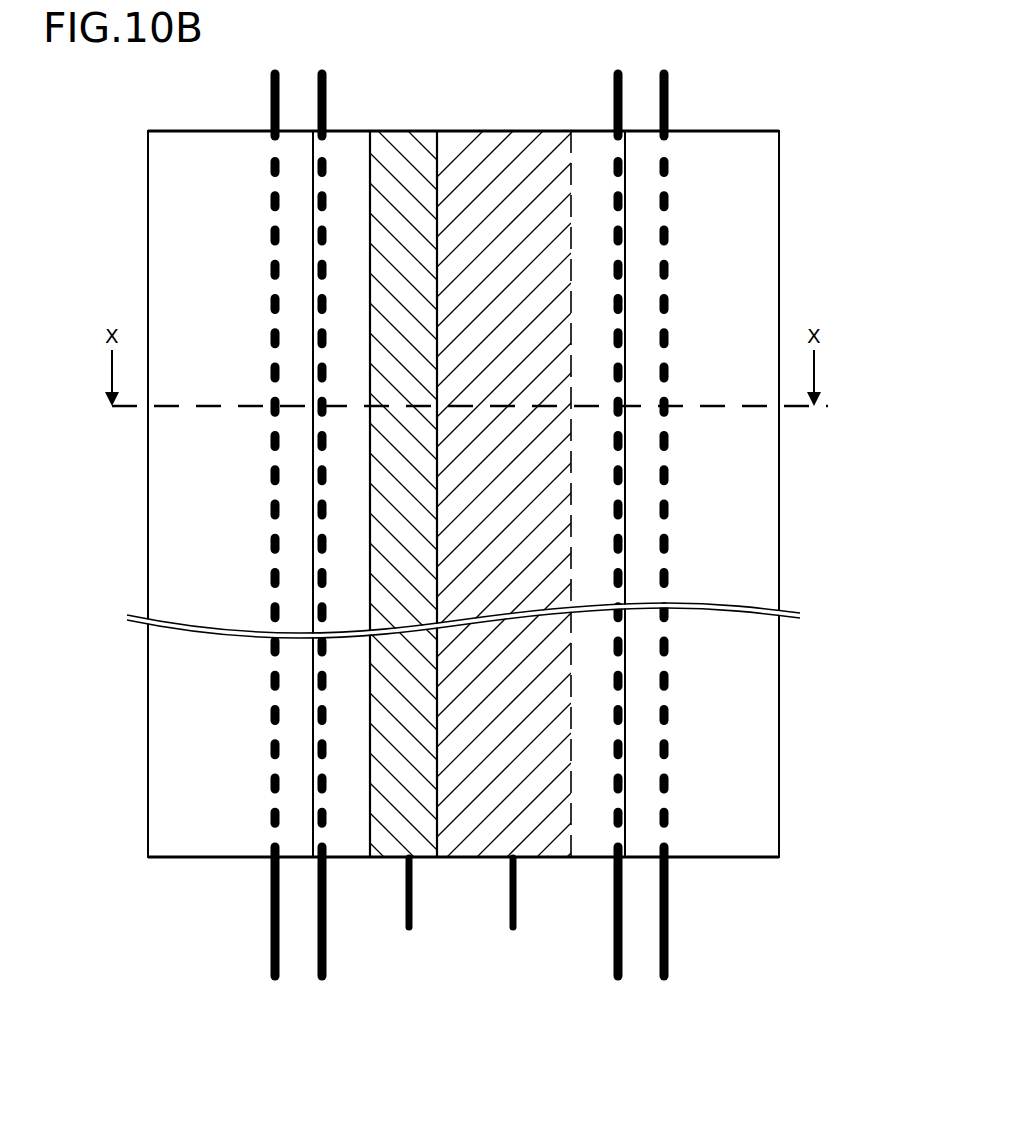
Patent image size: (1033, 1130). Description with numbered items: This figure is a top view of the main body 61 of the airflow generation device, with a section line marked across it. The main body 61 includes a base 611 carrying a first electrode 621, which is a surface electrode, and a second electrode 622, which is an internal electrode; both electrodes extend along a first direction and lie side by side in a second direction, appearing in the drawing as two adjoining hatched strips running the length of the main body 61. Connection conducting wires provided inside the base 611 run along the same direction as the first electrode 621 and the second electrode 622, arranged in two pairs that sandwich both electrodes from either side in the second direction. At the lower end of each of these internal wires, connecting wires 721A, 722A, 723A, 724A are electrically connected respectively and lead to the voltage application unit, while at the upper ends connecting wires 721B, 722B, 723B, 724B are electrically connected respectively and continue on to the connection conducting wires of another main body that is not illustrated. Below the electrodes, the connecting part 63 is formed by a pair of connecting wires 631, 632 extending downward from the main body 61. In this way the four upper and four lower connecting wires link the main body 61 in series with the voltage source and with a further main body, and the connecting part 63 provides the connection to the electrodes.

The main body 61 is at (469, 515).
The base 611 is at (348, 140).
The first electrode 621 is at (395, 138).
The second electrode 622 is at (505, 140).
The connecting part 63 is at (464, 940).
The connecting wire 631 is at (408, 932).
The connecting wire 632 is at (512, 923).
The connecting wire 721A is at (275, 891).
The connecting wire 721B is at (275, 93).
The connecting wire 722A is at (322, 918).
The connecting wire 722B is at (322, 118).
The connecting wire 723A is at (618, 878).
The connecting wire 723B is at (618, 78).
The connecting wire 724A is at (664, 907).
The connecting wire 724B is at (664, 108).